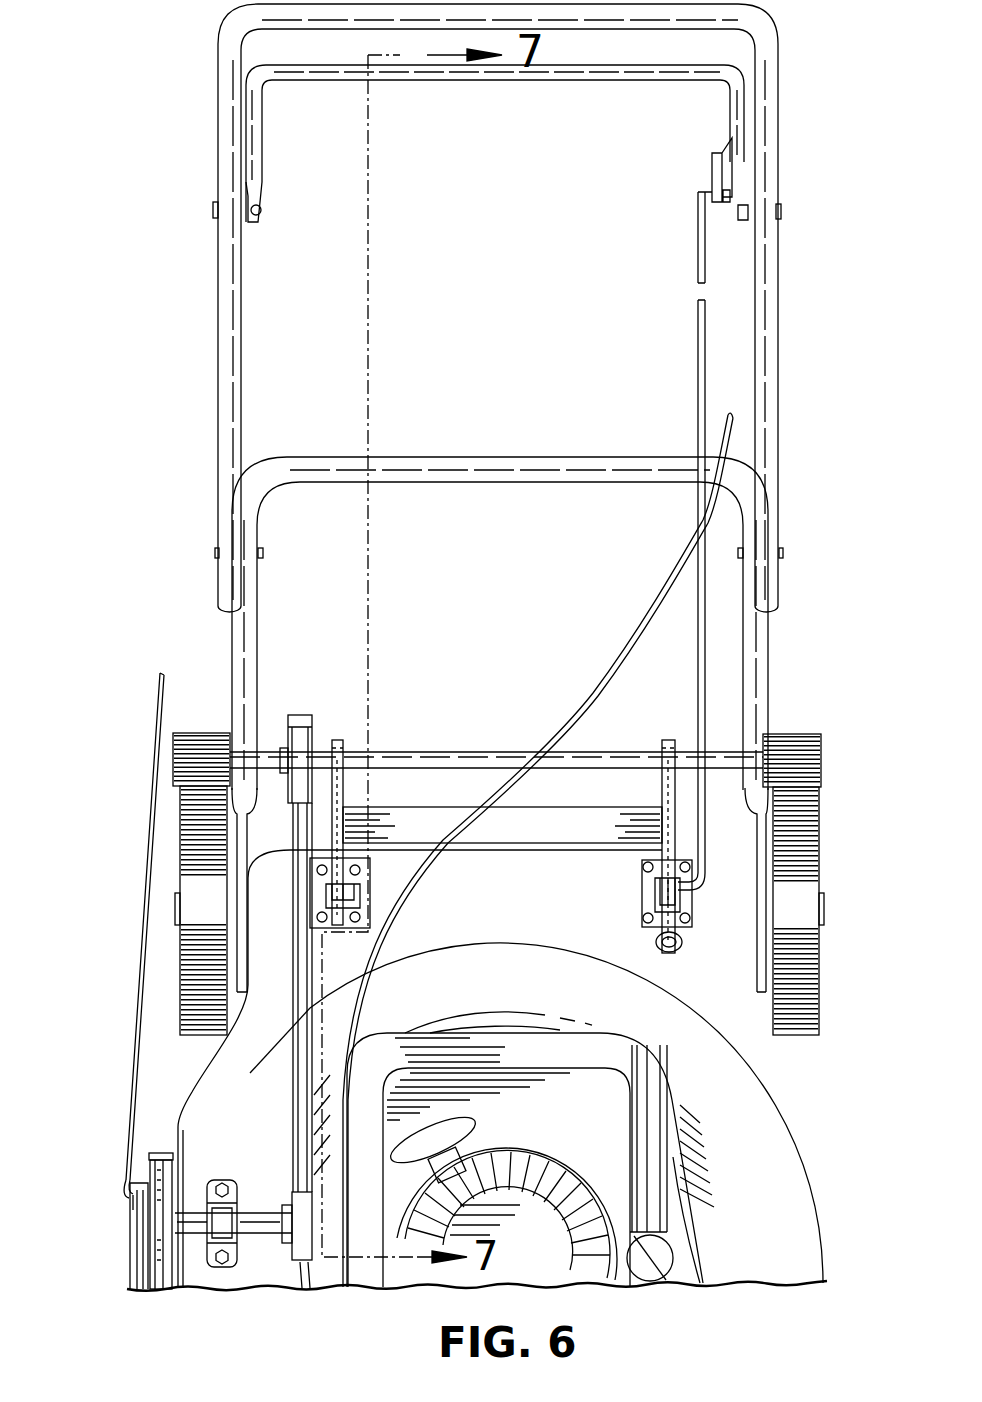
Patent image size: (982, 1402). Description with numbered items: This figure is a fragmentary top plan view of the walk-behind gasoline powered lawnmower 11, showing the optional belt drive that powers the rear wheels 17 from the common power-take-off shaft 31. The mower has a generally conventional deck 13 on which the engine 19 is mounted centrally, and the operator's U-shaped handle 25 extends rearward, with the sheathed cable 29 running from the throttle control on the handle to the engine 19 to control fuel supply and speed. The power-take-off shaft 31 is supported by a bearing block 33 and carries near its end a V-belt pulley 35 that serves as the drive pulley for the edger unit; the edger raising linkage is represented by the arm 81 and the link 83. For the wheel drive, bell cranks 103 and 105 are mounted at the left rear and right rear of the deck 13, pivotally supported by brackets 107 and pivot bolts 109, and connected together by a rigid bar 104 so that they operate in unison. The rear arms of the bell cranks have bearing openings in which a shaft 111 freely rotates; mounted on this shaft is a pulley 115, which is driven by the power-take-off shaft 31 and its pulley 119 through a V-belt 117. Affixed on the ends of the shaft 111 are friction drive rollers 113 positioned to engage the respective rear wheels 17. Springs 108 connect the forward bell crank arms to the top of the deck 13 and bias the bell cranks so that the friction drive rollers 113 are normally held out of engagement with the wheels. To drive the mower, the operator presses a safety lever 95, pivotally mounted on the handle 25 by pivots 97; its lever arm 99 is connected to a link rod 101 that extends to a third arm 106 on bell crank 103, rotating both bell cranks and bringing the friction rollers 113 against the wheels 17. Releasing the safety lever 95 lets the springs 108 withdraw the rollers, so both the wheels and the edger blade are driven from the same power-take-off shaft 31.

The lawnmower 11 is at (222, 640).
The deck 13 is at (780, 1204).
The rear wheels 17 is at (208, 1036).
The engine 19 is at (603, 1126).
The handle 25 is at (243, 372).
The sheathed cable 29 is at (674, 586).
The power-take-off shaft 31 is at (258, 1212).
The bearing block 33 is at (207, 1200).
The V-belt pulley 35 is at (150, 1176).
The arm 81 is at (128, 1240).
The link 83 is at (146, 840).
The safety lever 95 is at (582, 82).
The pivots 97 is at (258, 210).
The lever arm 99 is at (712, 168).
The link rod 101 is at (694, 320).
The bell crank 103 is at (662, 790).
The rigid bar 104 is at (562, 836).
The bell crank 105 is at (344, 792).
The third arm 106 is at (670, 858).
The brackets 107 is at (360, 872).
The springs 108 is at (676, 960).
The pivot bolts 109 is at (362, 908).
The shaft 111 is at (432, 752).
The friction drive rollers 113 is at (210, 733).
The pulley 115 is at (310, 716).
The V-belt 117 is at (304, 1064).
The pulley 119 is at (292, 1256).